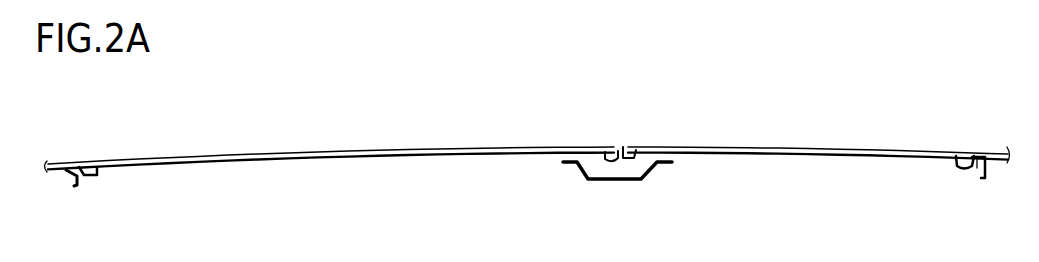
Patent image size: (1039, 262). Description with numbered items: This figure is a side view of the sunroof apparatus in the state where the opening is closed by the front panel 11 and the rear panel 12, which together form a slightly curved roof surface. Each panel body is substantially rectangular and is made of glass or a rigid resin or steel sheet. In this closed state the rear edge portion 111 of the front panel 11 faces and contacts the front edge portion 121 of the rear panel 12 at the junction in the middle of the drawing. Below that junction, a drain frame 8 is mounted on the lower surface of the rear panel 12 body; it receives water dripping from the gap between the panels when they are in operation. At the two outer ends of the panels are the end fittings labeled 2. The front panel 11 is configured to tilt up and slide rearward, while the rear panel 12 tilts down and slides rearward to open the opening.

The edge clip / end fastener 2 is at (69, 162).
The drain frame 8 is at (613, 182).
The front panel 11 is at (273, 152).
The rear panel 12 is at (822, 150).
The rear edge portion 111 is at (610, 142).
The front edge portion 121 is at (638, 142).